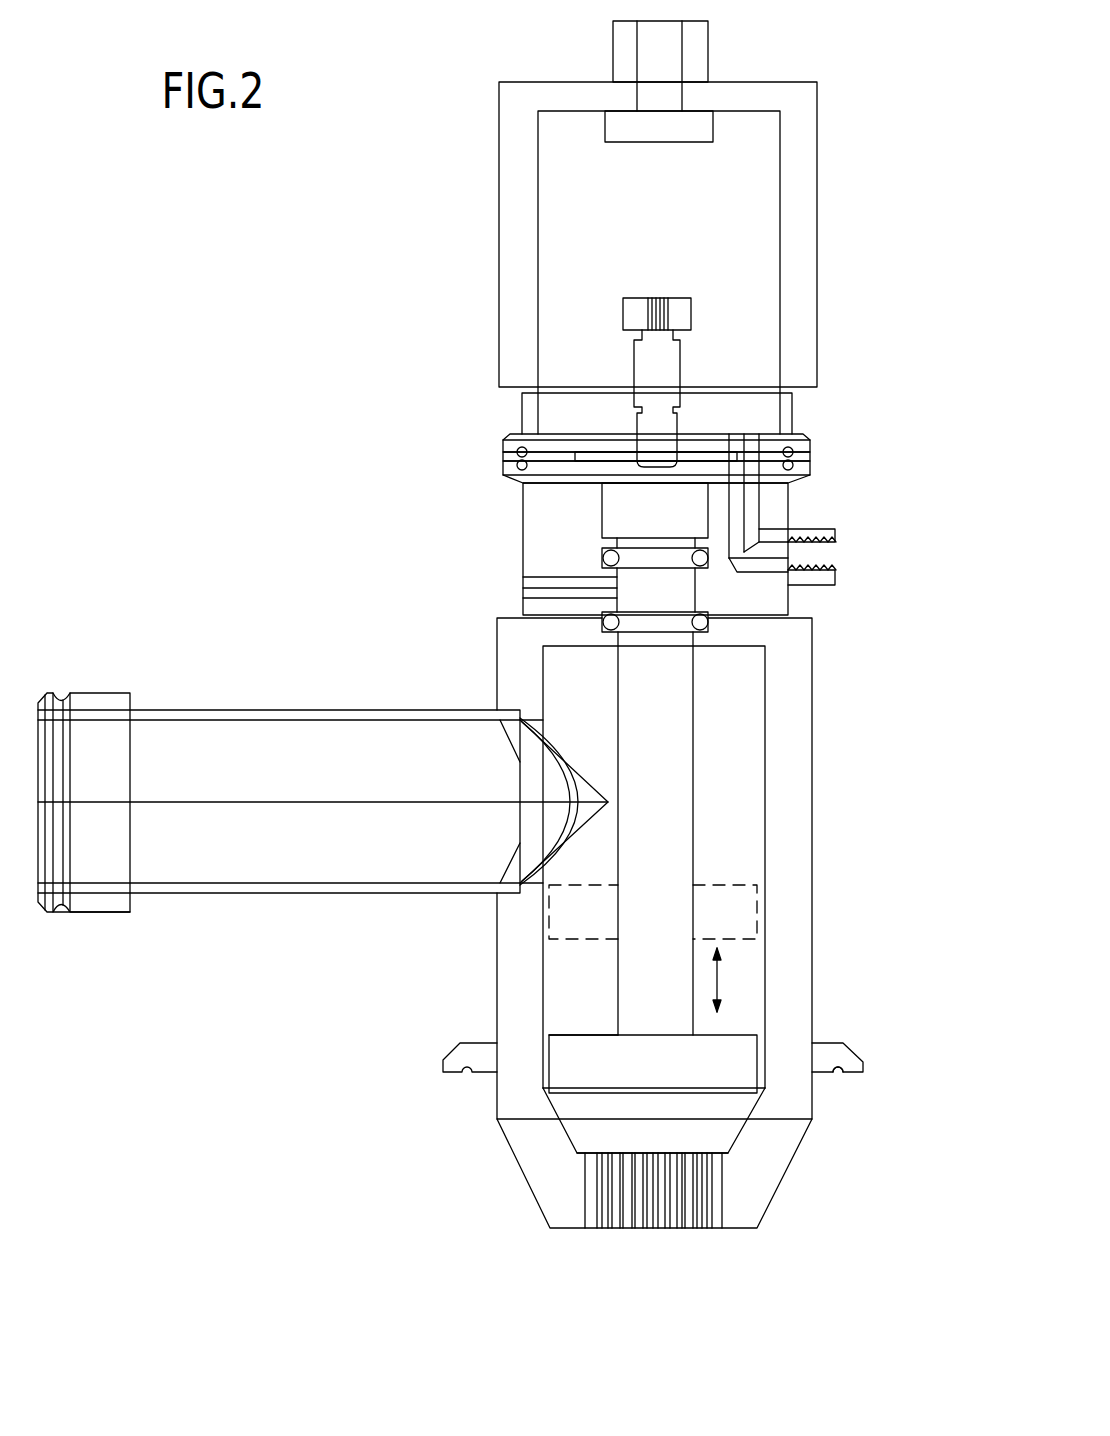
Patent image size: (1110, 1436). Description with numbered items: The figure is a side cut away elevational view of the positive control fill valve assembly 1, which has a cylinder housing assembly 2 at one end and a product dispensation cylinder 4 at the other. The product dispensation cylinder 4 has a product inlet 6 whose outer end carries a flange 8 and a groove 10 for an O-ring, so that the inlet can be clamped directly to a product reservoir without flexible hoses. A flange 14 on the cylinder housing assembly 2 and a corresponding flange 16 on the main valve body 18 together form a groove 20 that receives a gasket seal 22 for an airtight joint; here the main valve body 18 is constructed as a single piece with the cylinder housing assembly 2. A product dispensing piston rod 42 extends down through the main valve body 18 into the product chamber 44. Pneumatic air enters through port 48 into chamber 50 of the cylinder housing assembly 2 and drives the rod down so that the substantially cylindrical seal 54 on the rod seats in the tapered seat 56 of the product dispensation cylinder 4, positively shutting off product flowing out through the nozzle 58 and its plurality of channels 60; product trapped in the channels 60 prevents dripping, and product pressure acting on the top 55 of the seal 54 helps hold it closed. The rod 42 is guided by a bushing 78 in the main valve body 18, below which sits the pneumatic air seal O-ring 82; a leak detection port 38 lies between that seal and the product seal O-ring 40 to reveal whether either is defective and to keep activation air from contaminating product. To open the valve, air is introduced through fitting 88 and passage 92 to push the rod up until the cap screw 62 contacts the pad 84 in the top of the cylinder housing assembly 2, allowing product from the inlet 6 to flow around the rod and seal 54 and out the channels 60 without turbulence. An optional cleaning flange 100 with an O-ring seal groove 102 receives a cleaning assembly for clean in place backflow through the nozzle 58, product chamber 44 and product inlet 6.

The positive control fill valve assembly 1 is at (838, 353).
The cylinder housing assembly 2 is at (802, 238).
The product dispensation cylinder 4 is at (802, 845).
The product inlet 6 is at (320, 735).
The flange 8 is at (80, 693).
The groove 10 is at (62, 693).
The flange 14 is at (810, 443).
The flange 16 is at (810, 462).
The main valve body 18 is at (780, 497).
The groove 20 is at (525, 455).
The gasket seal 22 is at (548, 458).
The leak detection port 38 is at (523, 597).
The product seal O-ring 40 is at (710, 624).
The product dispensing piston rod 42 is at (672, 685).
The product chamber 44 is at (708, 805).
The port 48 is at (688, 38).
The chamber 50 is at (735, 175).
The substantially cylindrical seal 54 is at (745, 908).
The top 55 is at (577, 1035).
The tapered seat 56 is at (747, 1105).
The nozzle 58 is at (742, 1203).
The channels 60 is at (687, 1228).
The cap screw 62 is at (683, 315).
The bushing 78 is at (608, 518).
The pneumatic air seal O-ring 82 is at (608, 558).
The pad 84 is at (697, 127).
The fitting 88 is at (836, 584).
The passage 92 is at (745, 522).
The cleaning flange 100 is at (865, 1062).
The O-ring seal groove 102 is at (838, 1072).